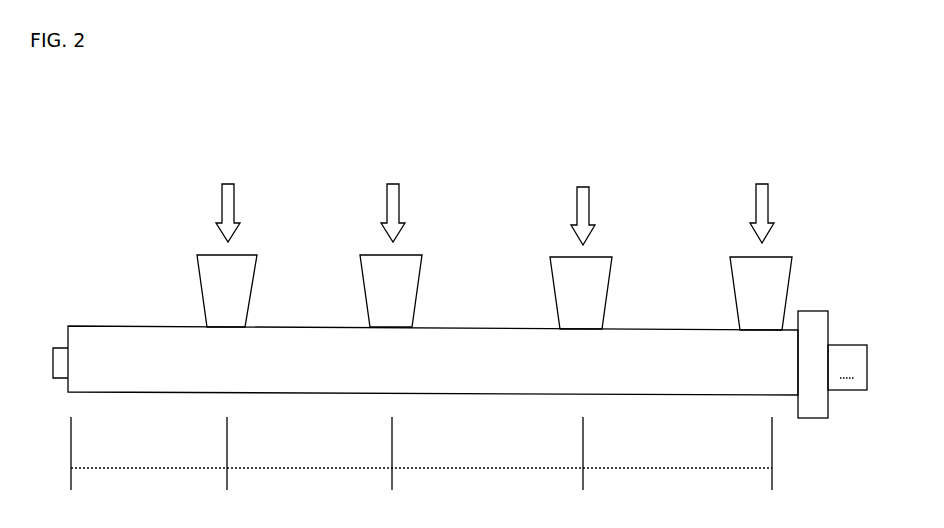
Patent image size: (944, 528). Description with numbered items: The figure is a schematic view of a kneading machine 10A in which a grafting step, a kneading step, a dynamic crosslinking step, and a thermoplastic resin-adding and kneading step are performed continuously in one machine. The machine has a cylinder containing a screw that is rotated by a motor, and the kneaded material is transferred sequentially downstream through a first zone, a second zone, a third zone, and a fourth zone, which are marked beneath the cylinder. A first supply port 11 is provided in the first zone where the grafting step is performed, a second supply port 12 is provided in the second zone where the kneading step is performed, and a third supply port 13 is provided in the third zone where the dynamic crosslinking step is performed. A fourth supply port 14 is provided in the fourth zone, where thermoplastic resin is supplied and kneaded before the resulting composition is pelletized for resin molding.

The kneading machine 10A is at (687, 165).
The first supply port 11 is at (738, 253).
The second supply port 12 is at (558, 253).
The third supply port 13 is at (368, 252).
The fourth supply port 14 is at (203, 252).